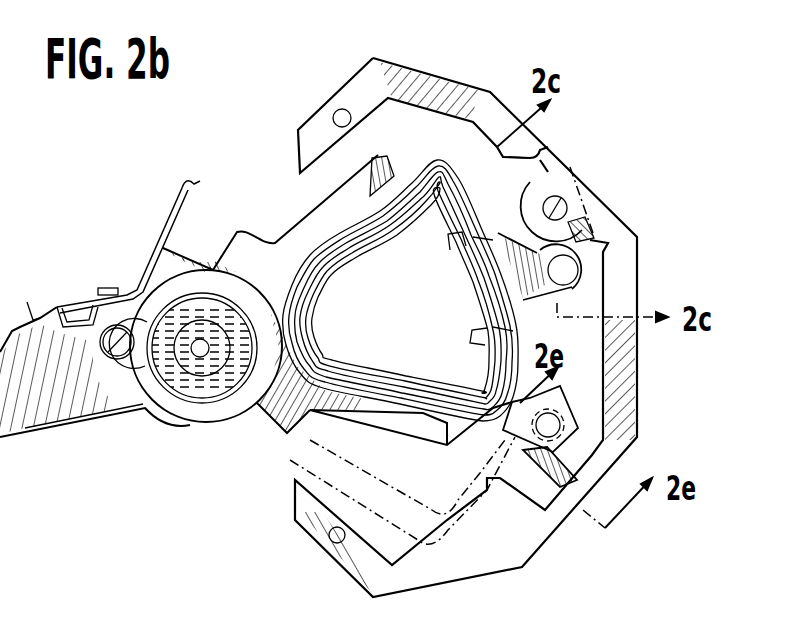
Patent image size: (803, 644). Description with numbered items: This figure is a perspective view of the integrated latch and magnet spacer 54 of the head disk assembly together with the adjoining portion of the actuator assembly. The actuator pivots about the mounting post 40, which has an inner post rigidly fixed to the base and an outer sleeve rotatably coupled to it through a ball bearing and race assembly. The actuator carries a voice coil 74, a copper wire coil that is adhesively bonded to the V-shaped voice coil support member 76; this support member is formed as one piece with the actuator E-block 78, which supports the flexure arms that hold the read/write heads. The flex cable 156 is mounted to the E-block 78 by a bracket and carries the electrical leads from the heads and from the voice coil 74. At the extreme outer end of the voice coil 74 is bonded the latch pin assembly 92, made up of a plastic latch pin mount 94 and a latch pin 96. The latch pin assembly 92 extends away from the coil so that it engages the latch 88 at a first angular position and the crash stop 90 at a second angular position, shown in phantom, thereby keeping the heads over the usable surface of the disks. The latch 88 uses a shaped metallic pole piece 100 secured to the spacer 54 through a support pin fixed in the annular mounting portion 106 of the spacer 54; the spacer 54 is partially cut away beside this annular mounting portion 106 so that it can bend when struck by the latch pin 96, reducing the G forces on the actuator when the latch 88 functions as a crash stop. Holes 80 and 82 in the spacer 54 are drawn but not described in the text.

The mounting post 40 is at (196, 388).
The spacer 54 is at (447, 80).
The voice coil 74 is at (363, 240).
The voice coil support member 76 is at (300, 225).
The E-block 78 is at (8, 432).
The mounting hole 80 is at (336, 110).
The mounting hole 82 is at (333, 540).
The latch 88 is at (638, 236).
The crash stop 90 is at (581, 458).
The latch pin assembly 92 is at (530, 304).
The latch pin mount 94 is at (473, 300).
The latch pin 96 is at (563, 270).
The metallic pole piece 100 is at (548, 146).
The annular mounting portion 106 is at (575, 213).
The flex cable 156 is at (178, 205).